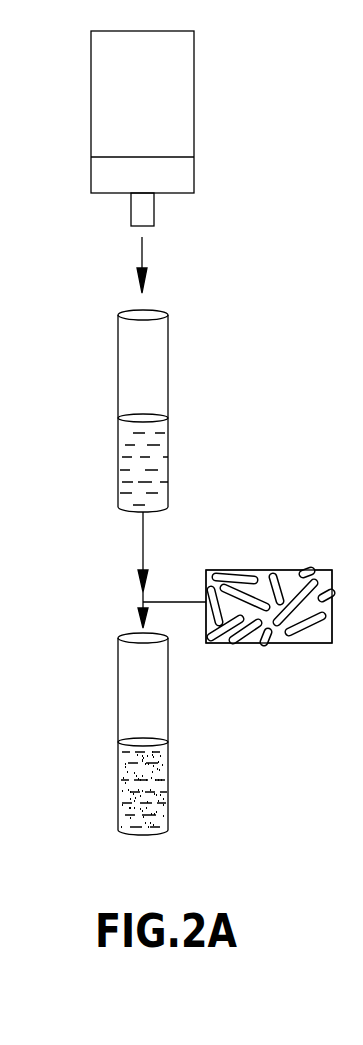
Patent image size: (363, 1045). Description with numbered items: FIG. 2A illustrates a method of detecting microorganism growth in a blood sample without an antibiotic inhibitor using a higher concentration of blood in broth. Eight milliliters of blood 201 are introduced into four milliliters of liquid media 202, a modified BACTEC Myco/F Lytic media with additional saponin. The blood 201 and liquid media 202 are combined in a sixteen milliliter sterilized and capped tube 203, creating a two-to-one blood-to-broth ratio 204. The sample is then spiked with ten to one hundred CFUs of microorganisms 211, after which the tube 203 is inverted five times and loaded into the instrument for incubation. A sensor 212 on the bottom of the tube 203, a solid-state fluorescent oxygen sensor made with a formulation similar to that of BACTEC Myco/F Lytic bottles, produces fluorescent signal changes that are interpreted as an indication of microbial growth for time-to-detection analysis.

The blood 201 is at (194, 133).
The liquid media 202 is at (135, 447).
The tube 203 is at (118, 313).
The blood-to-broth ratio 204 is at (135, 772).
The microorganisms 211 is at (258, 643).
The sensor 212 is at (138, 835).